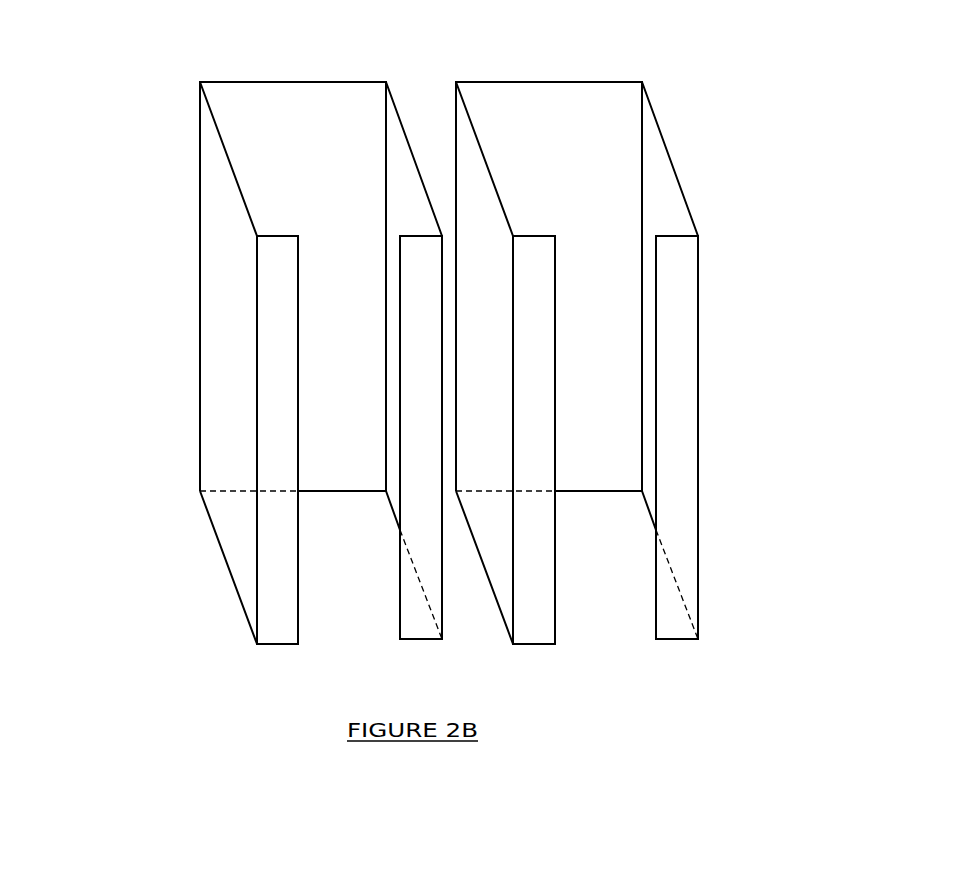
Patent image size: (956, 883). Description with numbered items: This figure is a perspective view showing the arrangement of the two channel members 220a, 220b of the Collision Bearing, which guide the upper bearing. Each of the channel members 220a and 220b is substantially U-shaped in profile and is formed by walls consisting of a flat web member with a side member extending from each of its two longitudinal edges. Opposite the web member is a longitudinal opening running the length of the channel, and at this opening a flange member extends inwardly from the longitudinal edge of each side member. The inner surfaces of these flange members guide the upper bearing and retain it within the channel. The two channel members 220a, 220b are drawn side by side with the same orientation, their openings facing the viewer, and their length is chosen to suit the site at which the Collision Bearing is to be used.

The channel member 220a is at (218, 77).
The channel member 220b is at (708, 195).